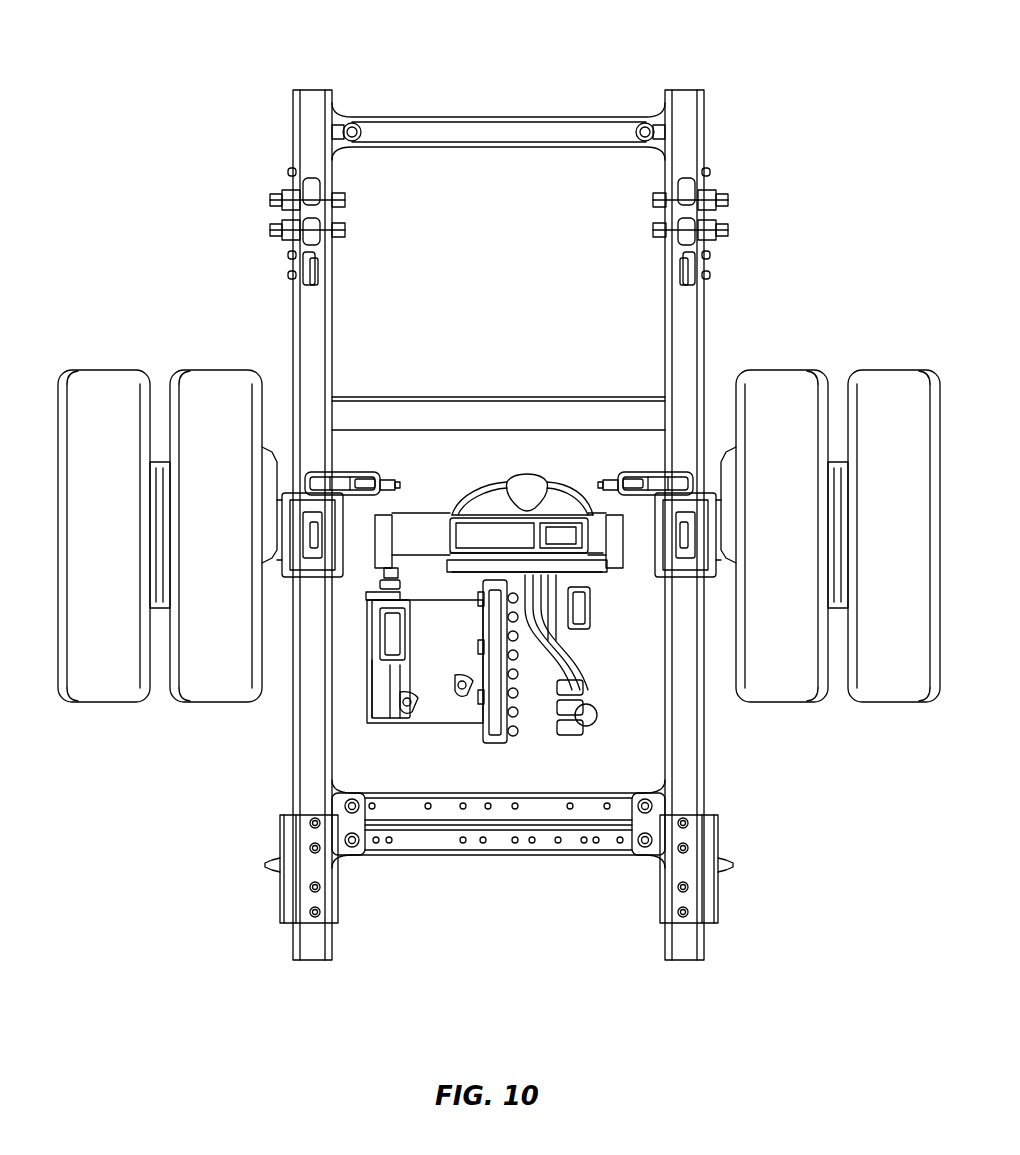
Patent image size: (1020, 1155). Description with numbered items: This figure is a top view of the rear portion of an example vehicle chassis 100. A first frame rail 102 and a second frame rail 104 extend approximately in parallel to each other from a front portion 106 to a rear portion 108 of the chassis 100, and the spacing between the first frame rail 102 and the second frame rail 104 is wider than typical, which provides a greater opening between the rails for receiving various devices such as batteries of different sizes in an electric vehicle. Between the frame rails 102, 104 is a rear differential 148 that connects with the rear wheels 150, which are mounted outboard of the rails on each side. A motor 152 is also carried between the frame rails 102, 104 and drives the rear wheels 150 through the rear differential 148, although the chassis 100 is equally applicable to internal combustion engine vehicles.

The vehicle chassis 100 is at (222, 46).
The first frame rail 102 is at (697, 722).
The second frame rail 104 is at (302, 722).
The front portion 106 is at (530, 960).
The rear portion 108 is at (529, 78).
The rear differential 148 is at (473, 502).
The wheels 150 is at (102, 377).
The motor 152 is at (430, 712).